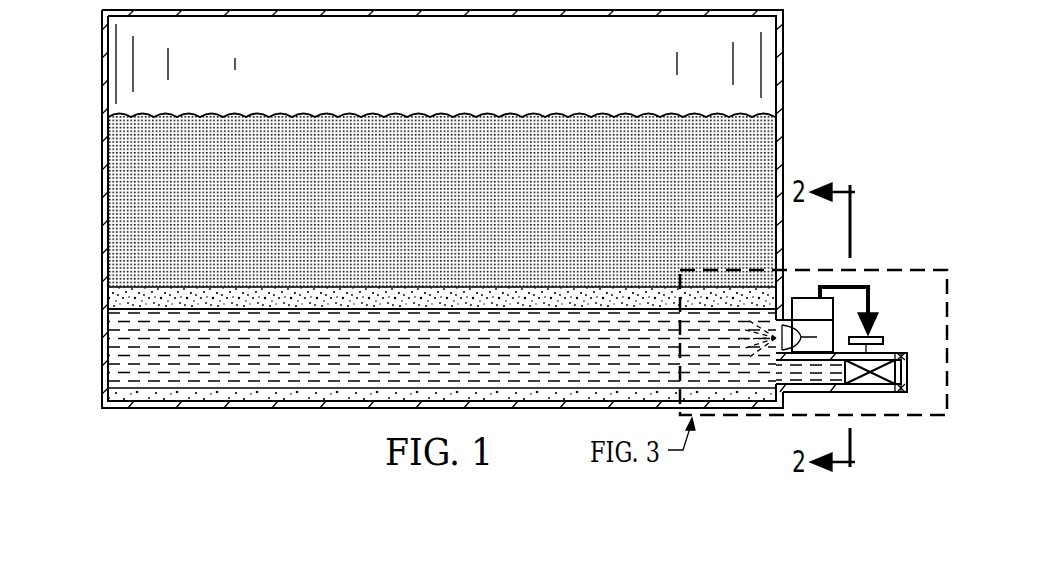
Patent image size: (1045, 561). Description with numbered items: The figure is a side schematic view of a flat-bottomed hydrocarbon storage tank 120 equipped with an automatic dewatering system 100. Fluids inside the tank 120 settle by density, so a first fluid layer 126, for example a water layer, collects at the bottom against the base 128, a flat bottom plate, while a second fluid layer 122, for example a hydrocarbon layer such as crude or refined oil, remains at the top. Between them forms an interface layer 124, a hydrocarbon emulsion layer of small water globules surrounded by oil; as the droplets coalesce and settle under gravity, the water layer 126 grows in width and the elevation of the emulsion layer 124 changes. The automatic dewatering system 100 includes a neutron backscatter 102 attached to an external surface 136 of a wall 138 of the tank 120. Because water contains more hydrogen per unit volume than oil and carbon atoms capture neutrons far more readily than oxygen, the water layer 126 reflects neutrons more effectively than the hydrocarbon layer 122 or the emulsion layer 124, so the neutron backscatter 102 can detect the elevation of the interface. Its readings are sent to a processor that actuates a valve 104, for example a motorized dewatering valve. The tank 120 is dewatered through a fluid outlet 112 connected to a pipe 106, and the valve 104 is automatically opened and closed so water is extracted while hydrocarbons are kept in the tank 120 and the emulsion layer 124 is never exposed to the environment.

The automatic dewatering system 100 is at (890, 242).
The neutron backscatter 102 is at (807, 330).
The valve 104 is at (880, 337).
The pipe 106 is at (885, 393).
The fluid outlet 112 is at (783, 380).
The hydrocarbon storage tank 120 is at (784, 62).
The second fluid layer 122 is at (112, 198).
The interface layer 124 is at (118, 298).
The first fluid layer 126 is at (118, 348).
The base 128 is at (281, 408).
The external surface 136 is at (104, 108).
The wall 138 is at (104, 58).